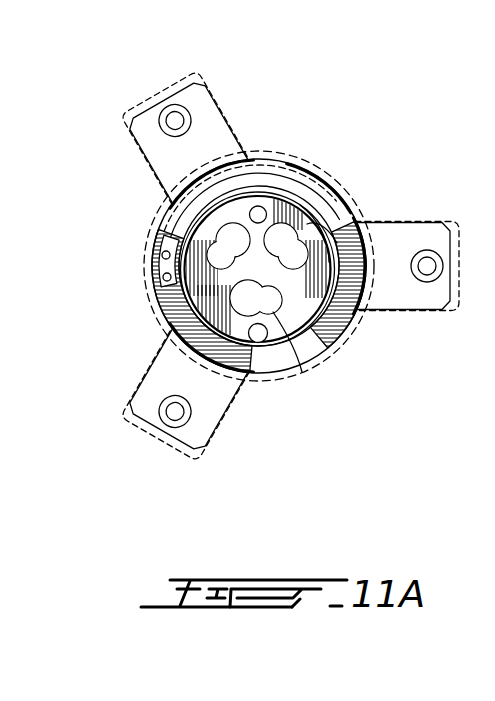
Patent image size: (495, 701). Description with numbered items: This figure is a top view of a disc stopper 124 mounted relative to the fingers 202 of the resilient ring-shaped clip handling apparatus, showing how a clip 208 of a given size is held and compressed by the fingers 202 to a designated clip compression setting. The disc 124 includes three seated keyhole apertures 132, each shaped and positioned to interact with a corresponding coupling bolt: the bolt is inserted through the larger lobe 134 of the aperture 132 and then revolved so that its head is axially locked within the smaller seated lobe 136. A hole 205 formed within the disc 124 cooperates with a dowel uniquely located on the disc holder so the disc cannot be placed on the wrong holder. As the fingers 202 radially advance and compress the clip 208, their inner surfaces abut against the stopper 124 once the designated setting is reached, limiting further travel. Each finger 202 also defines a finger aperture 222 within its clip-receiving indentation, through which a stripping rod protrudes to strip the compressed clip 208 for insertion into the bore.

The disc stopper 124 is at (340, 338).
The seated keyhole aperture 132 is at (303, 230).
The larger lobe 134 is at (215, 292).
The smaller seated lobe 136 is at (300, 330).
The finger 202 is at (216, 112).
The hole 205 is at (268, 205).
The clip 208 is at (152, 252).
The finger aperture 222 is at (268, 343).